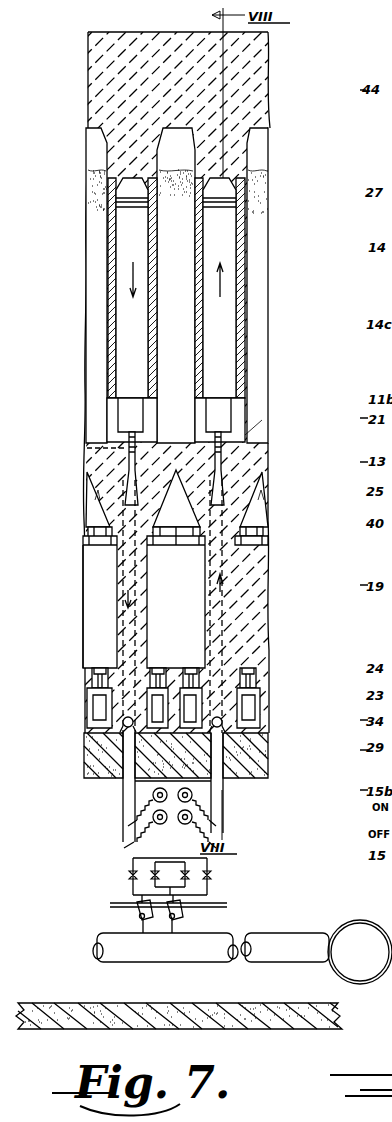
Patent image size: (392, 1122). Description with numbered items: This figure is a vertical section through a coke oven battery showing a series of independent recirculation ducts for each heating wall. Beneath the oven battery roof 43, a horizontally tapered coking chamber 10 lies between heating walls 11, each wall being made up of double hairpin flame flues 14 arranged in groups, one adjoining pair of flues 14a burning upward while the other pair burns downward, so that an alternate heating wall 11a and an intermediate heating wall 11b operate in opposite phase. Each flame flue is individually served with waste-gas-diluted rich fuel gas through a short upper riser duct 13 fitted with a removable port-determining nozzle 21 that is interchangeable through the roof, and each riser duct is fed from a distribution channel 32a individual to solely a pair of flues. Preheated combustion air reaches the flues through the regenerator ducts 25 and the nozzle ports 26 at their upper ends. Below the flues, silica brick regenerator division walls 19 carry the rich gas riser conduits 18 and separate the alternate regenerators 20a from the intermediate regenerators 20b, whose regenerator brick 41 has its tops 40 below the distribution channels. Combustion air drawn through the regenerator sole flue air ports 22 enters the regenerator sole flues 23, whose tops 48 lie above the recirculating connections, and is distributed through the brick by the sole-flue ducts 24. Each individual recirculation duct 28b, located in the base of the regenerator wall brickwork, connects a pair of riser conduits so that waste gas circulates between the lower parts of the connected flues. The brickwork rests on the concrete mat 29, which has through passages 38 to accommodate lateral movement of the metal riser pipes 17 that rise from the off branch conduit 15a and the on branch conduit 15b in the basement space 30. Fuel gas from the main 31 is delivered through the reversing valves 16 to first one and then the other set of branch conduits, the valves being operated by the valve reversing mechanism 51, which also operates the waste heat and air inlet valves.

The oven battery roof 43 is at (112, 78).
The coking chamber 10 is at (88, 306).
The heating wall 11 is at (112, 218).
The flame flue 14 is at (177, 288).
The adjoining pair of flues of alternate group 14a is at (175, 354).
The alternate heating wall 11a is at (108, 417).
The intermediate heating wall 11b is at (248, 412).
The removable port-determining nozzle 21 is at (245, 435).
The nozzle port 26 is at (80, 447).
The riser duct 13 is at (128, 454).
The distribution channel 32a is at (108, 488).
The regenerator duct 25 is at (250, 478).
The regenerator division wall 19 is at (205, 600).
The rich gas riser conduit 18 is at (205, 613).
The top of regenerator brick 40 is at (264, 522).
The regenerator brick 41 is at (266, 543).
The alternate regenerator 20a is at (176, 597).
The intermediate regenerator 20b is at (174, 597).
The sole-flue duct 24 is at (92, 676).
The top of sole channel 48 is at (256, 676).
The regenerator sole flue 23 is at (90, 687).
The regenerator sole flue air port 22 is at (96, 703).
The recirculation duct 28b is at (116, 722).
The concrete mat 29 is at (262, 752).
The through passage 38 is at (262, 764).
The off branch conduit 15a is at (153, 797).
The metal riser pipe 17 is at (138, 806).
The on branch conduit 15b is at (135, 838).
The basement space 30 is at (85, 897).
The valve reversing mechanism 51 is at (228, 906).
The reversing valve 16 is at (158, 917).
The fuel gas main 31 is at (112, 958).